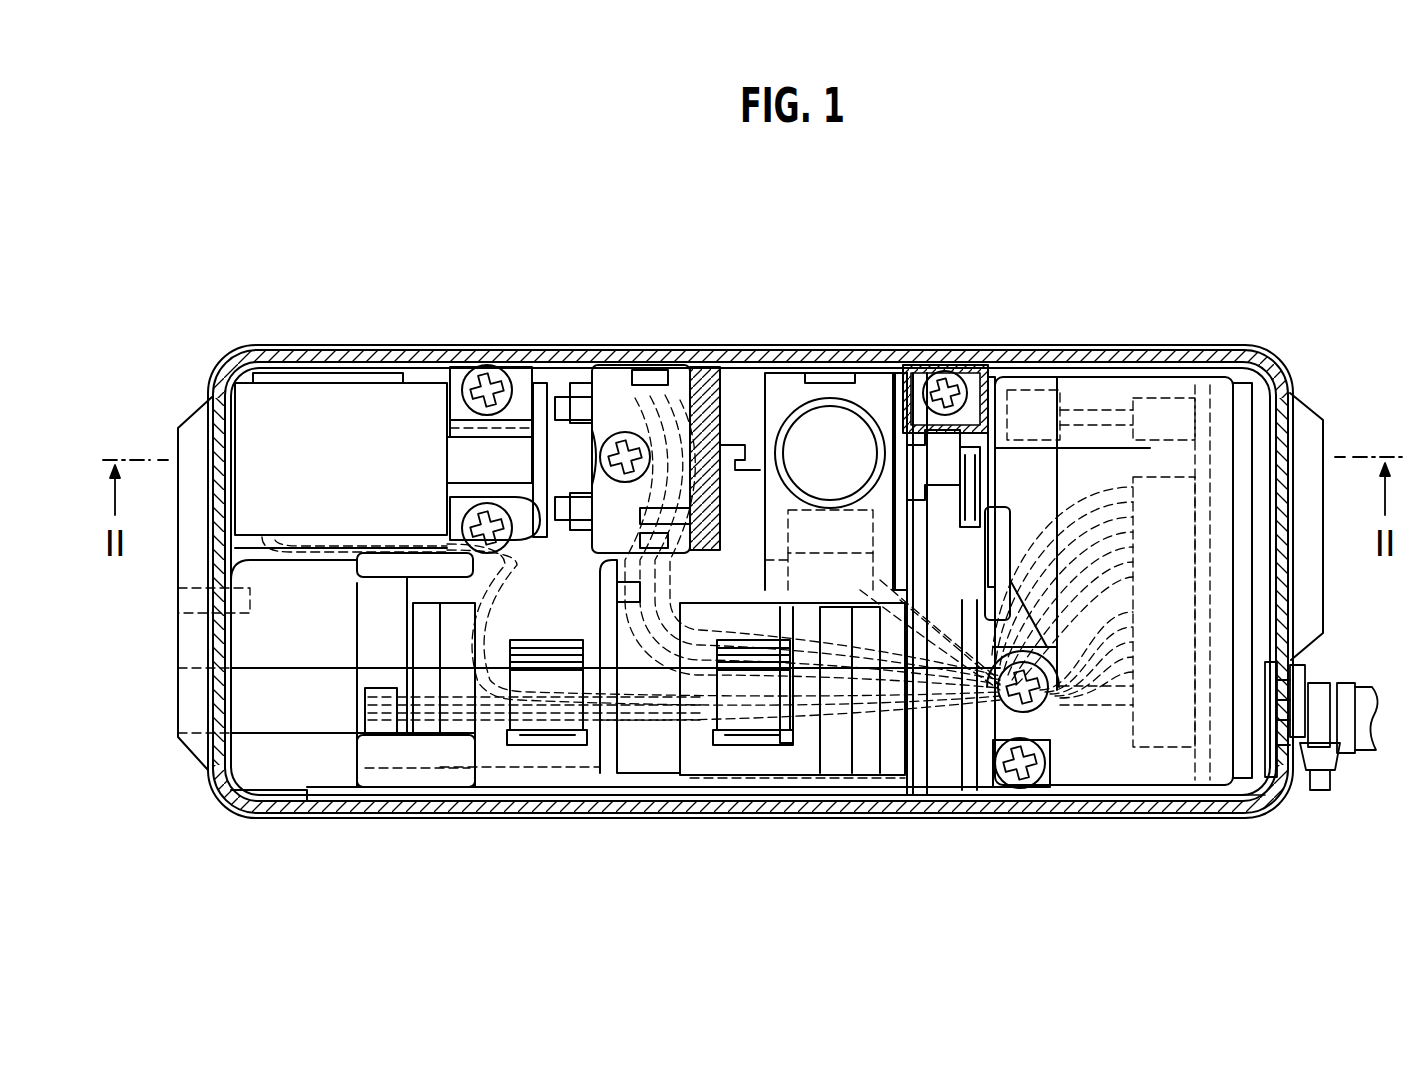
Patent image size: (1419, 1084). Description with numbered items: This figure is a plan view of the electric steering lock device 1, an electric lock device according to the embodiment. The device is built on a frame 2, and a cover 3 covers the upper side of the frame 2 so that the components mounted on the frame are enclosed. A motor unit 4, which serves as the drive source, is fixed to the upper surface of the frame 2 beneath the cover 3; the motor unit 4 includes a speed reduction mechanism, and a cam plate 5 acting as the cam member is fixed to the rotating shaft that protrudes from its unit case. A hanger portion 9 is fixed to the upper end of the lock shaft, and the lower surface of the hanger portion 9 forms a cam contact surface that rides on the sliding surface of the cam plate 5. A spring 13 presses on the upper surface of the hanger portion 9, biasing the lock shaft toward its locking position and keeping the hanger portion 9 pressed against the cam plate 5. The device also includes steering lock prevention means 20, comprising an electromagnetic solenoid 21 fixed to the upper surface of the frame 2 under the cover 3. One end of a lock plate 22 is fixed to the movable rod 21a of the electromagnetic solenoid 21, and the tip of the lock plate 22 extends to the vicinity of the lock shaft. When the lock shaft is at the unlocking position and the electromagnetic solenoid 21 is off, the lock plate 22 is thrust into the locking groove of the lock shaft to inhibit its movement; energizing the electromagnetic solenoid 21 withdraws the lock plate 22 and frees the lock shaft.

The electric steering lock device 1 is at (362, 318).
The frame 2 is at (190, 700).
The cover 3 is at (212, 425).
The motor unit 4 is at (793, 790).
The cam plate 5 is at (920, 475).
The hanger portion 9 is at (863, 380).
The spring 13 is at (795, 400).
The steering lock prevention means 20 is at (398, 382).
The electromagnetic solenoid 21 is at (297, 410).
The movable rod 21a is at (512, 445).
The lock plate 22 is at (735, 445).